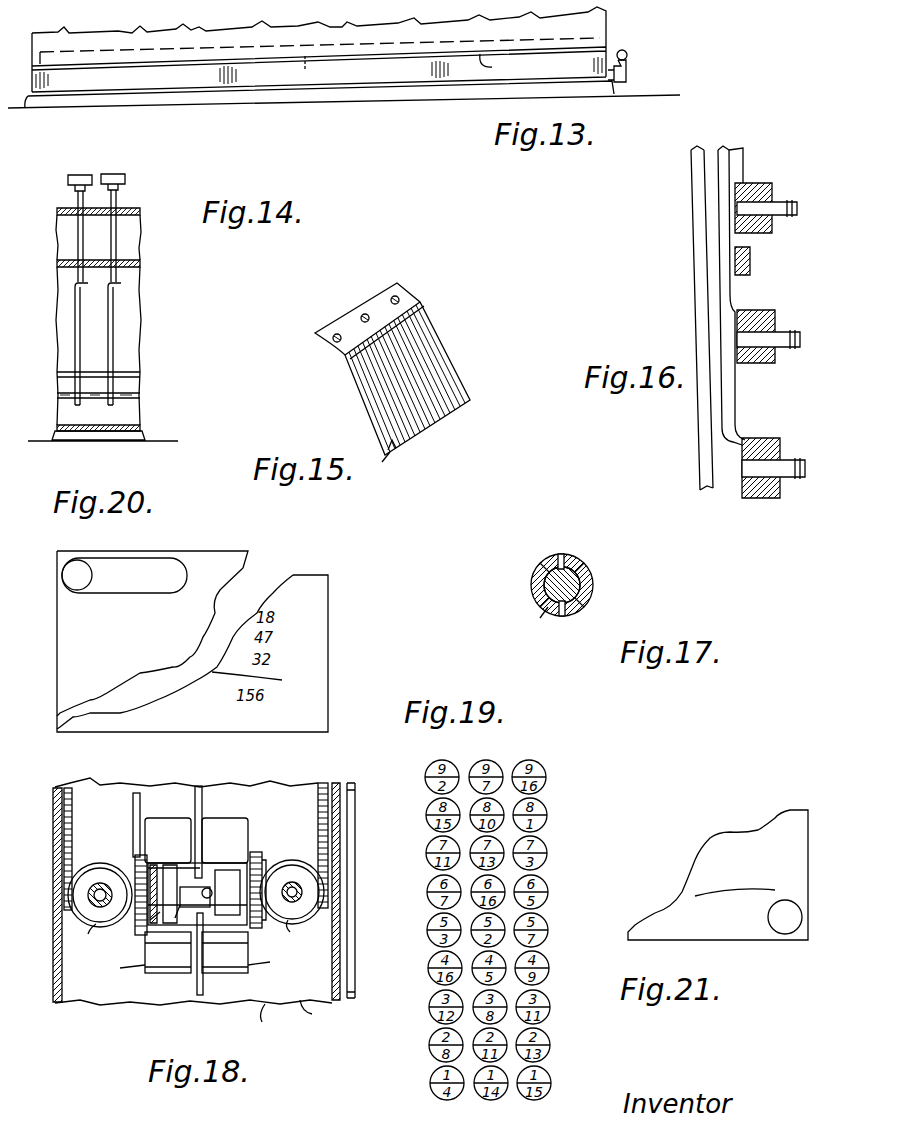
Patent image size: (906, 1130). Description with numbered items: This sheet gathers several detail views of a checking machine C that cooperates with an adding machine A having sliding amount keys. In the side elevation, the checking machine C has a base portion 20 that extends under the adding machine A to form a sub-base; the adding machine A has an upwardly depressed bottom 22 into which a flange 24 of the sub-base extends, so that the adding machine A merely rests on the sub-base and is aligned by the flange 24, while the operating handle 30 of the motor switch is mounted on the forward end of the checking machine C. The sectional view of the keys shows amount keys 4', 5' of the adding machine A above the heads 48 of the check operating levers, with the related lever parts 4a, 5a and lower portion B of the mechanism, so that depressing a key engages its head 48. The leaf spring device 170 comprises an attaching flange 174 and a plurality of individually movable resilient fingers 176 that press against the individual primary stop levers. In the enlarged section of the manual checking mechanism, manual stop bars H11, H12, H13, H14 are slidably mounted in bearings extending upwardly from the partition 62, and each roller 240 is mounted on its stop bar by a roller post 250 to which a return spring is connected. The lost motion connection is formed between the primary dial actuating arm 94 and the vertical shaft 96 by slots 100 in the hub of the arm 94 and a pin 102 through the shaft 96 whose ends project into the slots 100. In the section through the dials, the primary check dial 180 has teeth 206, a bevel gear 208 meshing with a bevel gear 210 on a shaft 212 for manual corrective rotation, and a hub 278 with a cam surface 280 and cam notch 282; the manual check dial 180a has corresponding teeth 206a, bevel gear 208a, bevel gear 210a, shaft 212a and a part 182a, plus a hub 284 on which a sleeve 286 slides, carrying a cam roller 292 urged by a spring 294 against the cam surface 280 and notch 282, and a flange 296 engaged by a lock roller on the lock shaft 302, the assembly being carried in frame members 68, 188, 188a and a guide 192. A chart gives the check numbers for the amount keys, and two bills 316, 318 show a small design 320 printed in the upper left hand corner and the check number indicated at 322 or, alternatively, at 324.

In FIG. 13, the adding machine A is at (319, 36).
In FIG. 14, the adding machine A is at (142, 290).
In FIG. 13, the checking machine C is at (319, 69).
In FIG. 18, the checking machine C is at (258, 1021).
In FIG. 14, the base block B is at (140, 407).
In FIG. 13, the base portion 20 is at (422, 88).
In FIG. 14, the base portion 20 is at (118, 441).
In FIG. 18, the base portion 20 is at (355, 928).
In FIG. 13, the upwardly depressed bottom 22 is at (307, 73).
In FIG. 13, the flange 24 is at (494, 67).
In FIG. 13, the operating handle 30 is at (628, 66).
In FIG. 14, the pin head 4' is at (80, 168).
In FIG. 14, the pin head 5' is at (124, 191).
In FIG. 14, the head 48 is at (112, 298).
In FIG. 14, the pin hook 4a is at (76, 350).
In FIG. 14, the pin hook 5a is at (113, 345).
In FIG. 15, the leaf spring device 170 is at (430, 314).
In FIG. 15, the attaching flange 174 is at (376, 298).
In FIG. 15, the resilient fingers 176 is at (384, 462).
In FIG. 16, the manual stop bar H11 is at (710, 495).
In FIG. 16, the manual stop bar H12 is at (730, 400).
In FIG. 16, the manual stop bar H13 is at (740, 285).
In FIG. 16, the manual stop bar H14 is at (743, 165).
In FIG. 16, the roller post 250 is at (780, 222).
In FIG. 16, the roller 240 is at (776, 360).
In FIG. 17, the primary dial actuating arm 94 is at (594, 581).
In FIG. 17, the vertical shaft 96 is at (540, 618).
In FIG. 17, the slots 100 is at (548, 558).
In FIG. 17, the pin 102 is at (568, 556).
In FIG. 20, the bill 316 is at (246, 572).
In FIG. 20, the small design 320 is at (130, 551).
In FIG. 20, the check number location 322 is at (73, 590).
In FIG. 21, the bill 318 is at (776, 828).
In FIG. 21, the check number location 324 is at (779, 932).
In FIG. 18, the frame 68 is at (262, 790).
In FIG. 18, the rack 188 is at (318, 810).
In FIG. 18, the rack 188a is at (72, 815).
In FIG. 18, the guide 192 is at (340, 888).
In FIG. 18, the shaft 212 is at (306, 877).
In FIG. 18, the shaft 212a is at (116, 880).
In FIG. 18, the bevel gear 210 is at (304, 933).
In FIG. 18, the bevel gear 210a is at (87, 940).
In FIG. 18, the rod 182a is at (140, 810).
In FIG. 18, the flange 296 is at (202, 830).
In FIG. 18, the lock shaft 302 is at (203, 985).
In FIG. 18, the hub 284 is at (136, 858).
In FIG. 18, the cam surface 280 is at (258, 852).
In FIG. 18, the hub 278 is at (268, 856).
In FIG. 18, the teeth 206 is at (248, 940).
In FIG. 18, the teeth 206a is at (145, 840).
In FIG. 18, the bevel gear 208 is at (262, 925).
In FIG. 18, the bevel gear 208a is at (142, 870).
In FIG. 18, the cam notch 282 is at (197, 894).
In FIG. 18, the cam roller 292 is at (191, 892).
In FIG. 18, the spring 294 is at (150, 920).
In FIG. 18, the sleeve 286 is at (175, 918).
In FIG. 18, the primary check dial 180 is at (273, 964).
In FIG. 18, the manual check dial 180a is at (115, 975).
In FIG. 18, the partition 62 is at (320, 1013).